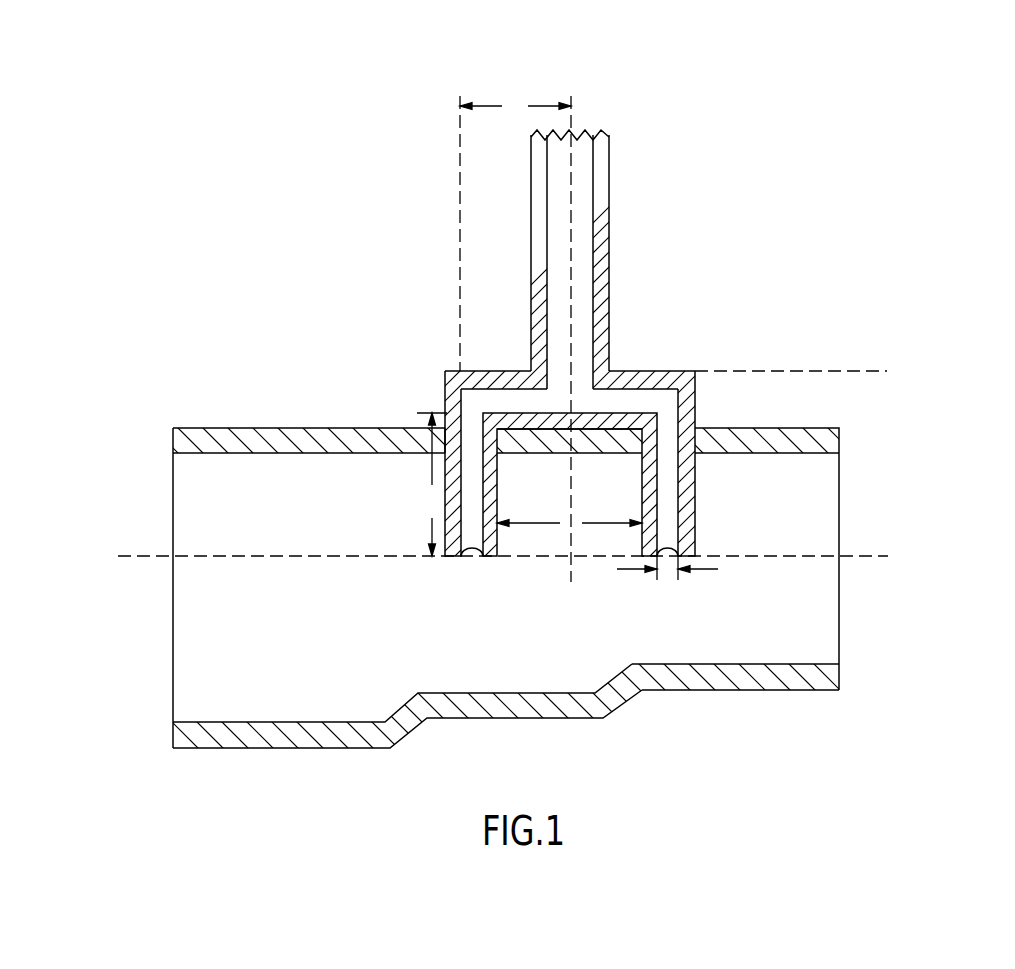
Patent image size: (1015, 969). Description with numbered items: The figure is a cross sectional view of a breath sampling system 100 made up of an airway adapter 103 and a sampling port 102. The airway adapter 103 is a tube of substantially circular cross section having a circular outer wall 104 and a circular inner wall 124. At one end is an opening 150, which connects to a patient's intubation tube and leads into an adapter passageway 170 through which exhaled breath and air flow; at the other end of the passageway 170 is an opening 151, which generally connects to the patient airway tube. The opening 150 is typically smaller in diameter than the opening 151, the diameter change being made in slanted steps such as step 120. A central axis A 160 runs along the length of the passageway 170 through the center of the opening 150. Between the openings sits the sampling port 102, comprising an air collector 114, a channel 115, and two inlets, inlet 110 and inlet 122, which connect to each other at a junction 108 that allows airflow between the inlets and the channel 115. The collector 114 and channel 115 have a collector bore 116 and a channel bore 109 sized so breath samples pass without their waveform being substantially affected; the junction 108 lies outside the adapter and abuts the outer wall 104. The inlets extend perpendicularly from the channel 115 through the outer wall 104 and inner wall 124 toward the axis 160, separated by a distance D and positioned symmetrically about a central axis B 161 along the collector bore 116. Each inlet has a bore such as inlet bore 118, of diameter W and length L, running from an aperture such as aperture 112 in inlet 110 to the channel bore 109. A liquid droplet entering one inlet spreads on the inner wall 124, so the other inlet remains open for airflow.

The breath sampling system 100 is at (878, 133).
The sampling port 102 is at (479, 249).
The airway adapter 103 is at (315, 370).
The circular outer wall 104 is at (223, 427).
The junction 108 is at (577, 388).
The channel bore 109 is at (443, 378).
The inlet 110 is at (445, 470).
The aperture 112 is at (473, 565).
The air collector 114 is at (531, 219).
The channel 115 is at (520, 360).
The collector bore 116 is at (580, 221).
The inlet bore 118 is at (473, 539).
The step 120 is at (402, 712).
The inlet 122 is at (697, 495).
The circular inner wall 124 is at (253, 453).
The opening 150 is at (852, 478).
The opening 151 is at (150, 588).
The central axis A 160 is at (890, 541).
The central axis B 161 is at (592, 101).
The adapter passageway 170 is at (797, 630).